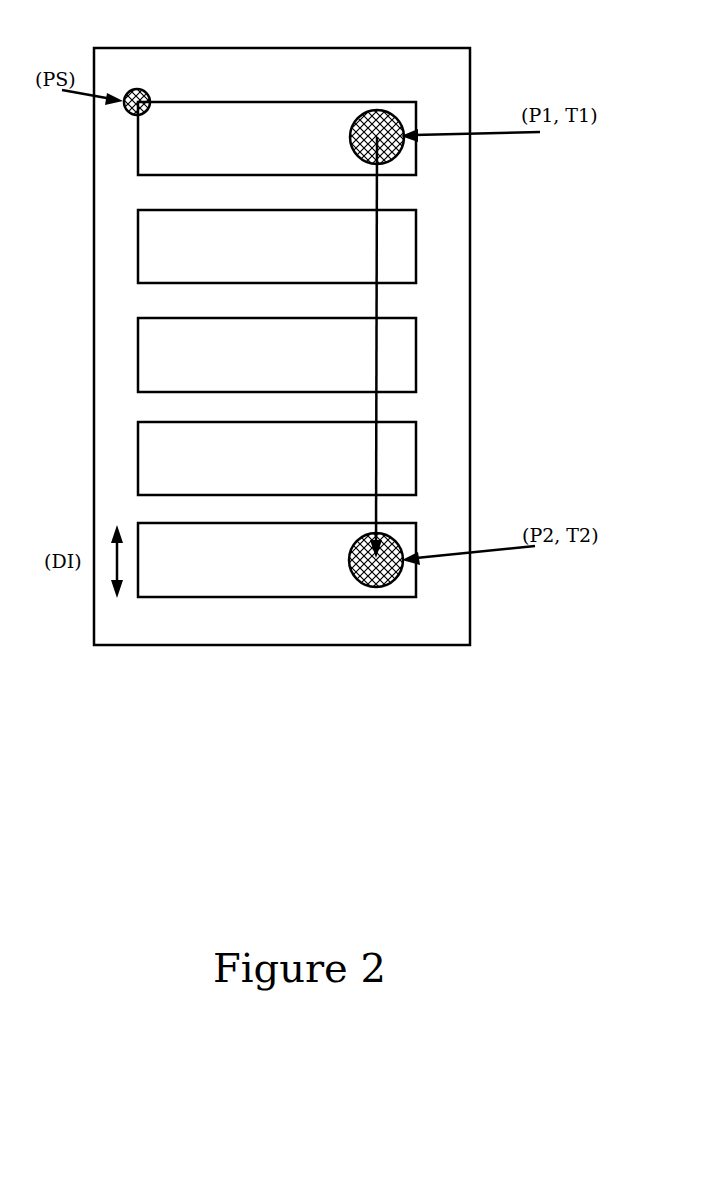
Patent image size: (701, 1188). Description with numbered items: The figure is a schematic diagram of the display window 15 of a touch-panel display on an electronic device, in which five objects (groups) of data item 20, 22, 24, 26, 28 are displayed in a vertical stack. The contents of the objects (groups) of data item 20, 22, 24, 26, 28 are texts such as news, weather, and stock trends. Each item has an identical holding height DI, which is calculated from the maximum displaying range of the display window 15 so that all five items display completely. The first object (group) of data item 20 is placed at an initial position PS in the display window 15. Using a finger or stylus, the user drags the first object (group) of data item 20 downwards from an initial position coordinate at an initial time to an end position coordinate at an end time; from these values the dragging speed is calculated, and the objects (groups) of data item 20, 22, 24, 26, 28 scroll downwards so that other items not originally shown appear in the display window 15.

The display window 15 is at (413, 48).
The first object (group) of data item 20 is at (416, 108).
The second object (group) of data item 22 is at (416, 248).
The third object (group) of data item 24 is at (416, 350).
The fourth object (group) of data item 26 is at (416, 457).
The fifth object (group) of data item 28 is at (416, 538).